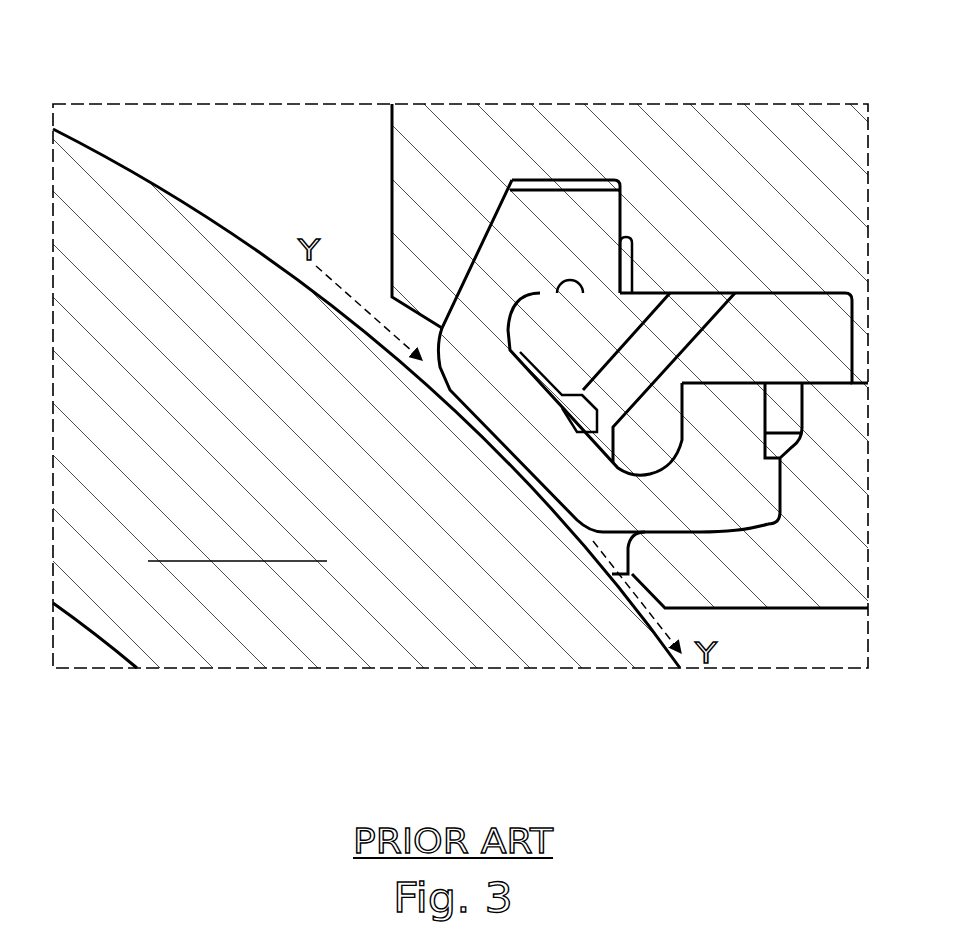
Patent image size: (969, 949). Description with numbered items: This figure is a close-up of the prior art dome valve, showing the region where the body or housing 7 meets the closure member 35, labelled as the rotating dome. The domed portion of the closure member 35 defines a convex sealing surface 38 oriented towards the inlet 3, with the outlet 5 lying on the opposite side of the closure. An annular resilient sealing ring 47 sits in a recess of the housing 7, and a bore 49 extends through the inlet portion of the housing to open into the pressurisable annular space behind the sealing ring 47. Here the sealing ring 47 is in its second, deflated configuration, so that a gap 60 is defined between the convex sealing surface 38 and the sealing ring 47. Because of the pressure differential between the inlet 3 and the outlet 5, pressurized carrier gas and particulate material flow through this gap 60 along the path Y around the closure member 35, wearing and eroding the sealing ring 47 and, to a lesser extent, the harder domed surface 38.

The inlet 3 is at (307, 121).
The outlet 5 is at (56, 752).
The body or housing 7 is at (429, 187).
The closure member 35 is at (247, 511).
The convex sealing surface 38 is at (260, 258).
The sealing ring 47 is at (728, 415).
The bore 49 is at (685, 317).
The gap 60 is at (502, 450).